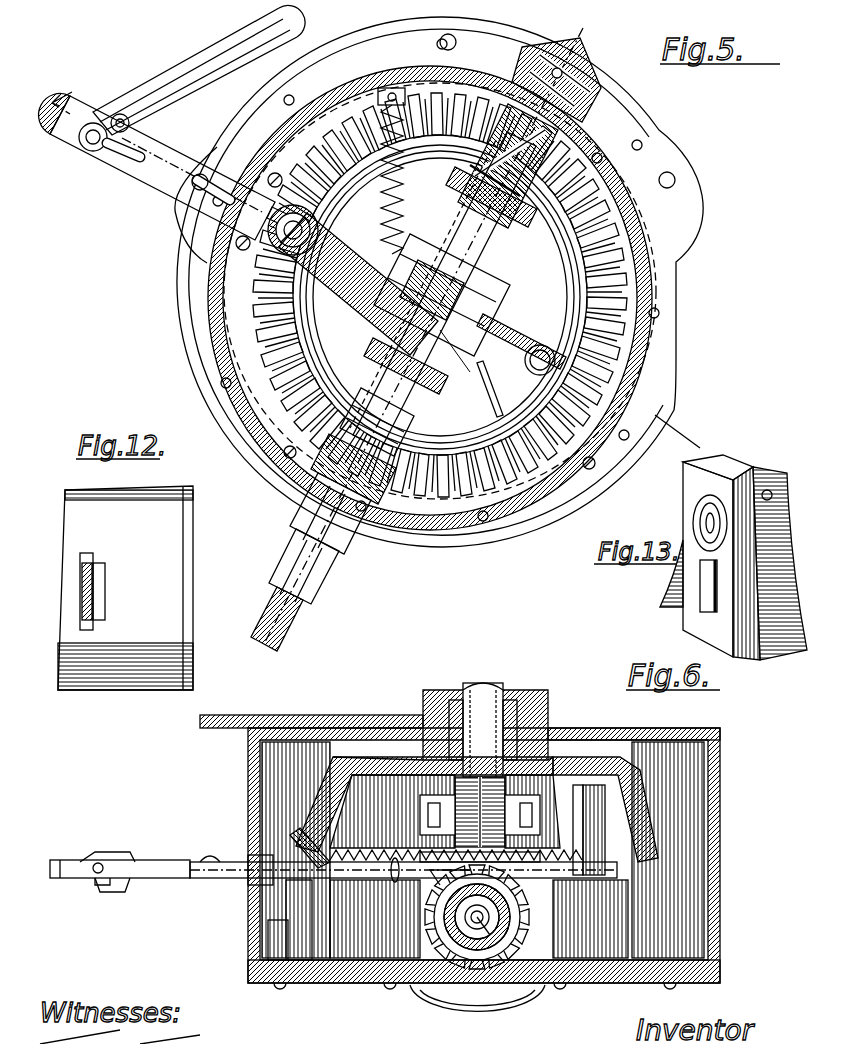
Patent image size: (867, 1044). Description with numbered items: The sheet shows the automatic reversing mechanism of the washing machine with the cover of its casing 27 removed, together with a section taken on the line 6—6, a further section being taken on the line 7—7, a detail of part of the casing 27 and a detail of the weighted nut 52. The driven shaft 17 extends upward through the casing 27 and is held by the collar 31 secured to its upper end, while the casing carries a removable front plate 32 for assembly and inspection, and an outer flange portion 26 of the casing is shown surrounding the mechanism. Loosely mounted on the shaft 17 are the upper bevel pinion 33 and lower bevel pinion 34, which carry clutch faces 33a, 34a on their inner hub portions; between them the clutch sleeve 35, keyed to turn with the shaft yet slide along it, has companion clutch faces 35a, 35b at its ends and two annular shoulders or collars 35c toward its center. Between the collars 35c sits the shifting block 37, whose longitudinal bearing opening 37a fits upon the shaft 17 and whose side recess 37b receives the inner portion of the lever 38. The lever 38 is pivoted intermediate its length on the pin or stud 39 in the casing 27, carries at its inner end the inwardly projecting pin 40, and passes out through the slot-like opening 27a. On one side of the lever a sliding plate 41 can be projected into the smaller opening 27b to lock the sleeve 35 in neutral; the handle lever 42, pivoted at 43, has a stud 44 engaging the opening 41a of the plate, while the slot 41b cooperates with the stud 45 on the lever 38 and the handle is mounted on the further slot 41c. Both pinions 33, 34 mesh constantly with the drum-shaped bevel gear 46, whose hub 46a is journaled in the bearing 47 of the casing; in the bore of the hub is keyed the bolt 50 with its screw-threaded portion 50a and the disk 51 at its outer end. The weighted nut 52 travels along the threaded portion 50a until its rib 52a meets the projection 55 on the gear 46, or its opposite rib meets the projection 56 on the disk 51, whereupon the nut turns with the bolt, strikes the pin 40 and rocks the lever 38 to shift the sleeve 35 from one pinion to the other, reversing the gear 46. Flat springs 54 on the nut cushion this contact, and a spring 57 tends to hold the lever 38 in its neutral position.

In FIG. 5, the section line 6 is at (376, 261).
In FIG. 5, the section line 7 is at (422, 333).
In FIG. 6, the driven shaft 17 is at (520, 925).
In FIG. 5, the casing flange 26 is at (703, 205).
In FIG. 6, the casing flange 26 is at (240, 709).
In FIG. 12, the casing 27 is at (158, 633).
In FIG. 6, the casing 27 is at (712, 802).
In FIG. 12, the opening 27a is at (88, 556).
In FIG. 6, the opening 27a is at (262, 856).
In FIG. 12, the smaller opening 27b is at (104, 585).
In FIG. 6, the smaller opening 27b is at (266, 900).
In FIG. 5, the collar 31 is at (600, 90).
In FIG. 12, the removable front plate 32 is at (193, 670).
In FIG. 6, the removable front plate 32 is at (603, 984).
In FIG. 5, the upper bevel pinion 33 is at (588, 160).
In FIG. 5, the clutch face 33a is at (470, 170).
In FIG. 5, the lower bevel pinion 34 is at (312, 455).
In FIG. 6, the lower bevel pinion 34 is at (528, 938).
In FIG. 5, the clutch face 34a is at (356, 396).
In FIG. 6, the clutch sleeve 35 is at (455, 930).
In FIG. 5, the clutch face 35a is at (512, 226).
In FIG. 5, the clutch face 35b is at (388, 342).
In FIG. 5, the annular shoulders 35c is at (500, 278).
In FIG. 6, the annular shoulders 35c is at (478, 930).
In FIG. 5, the shifting block 37 is at (480, 292).
In FIG. 6, the shifting block 37 is at (515, 908).
In FIG. 6, the bearing opening 37a is at (430, 955).
In FIG. 6, the side recess 37b is at (445, 893).
In FIG. 5, the lever 38 is at (404, 252).
In FIG. 12, the lever 38 is at (92, 603).
In FIG. 6, the lever 38 is at (210, 858).
In FIG. 5, the pin 39 is at (270, 235).
In FIG. 6, the pin 39 is at (312, 960).
In FIG. 5, the pin 40 is at (540, 344).
In FIG. 6, the pin 40 is at (613, 755).
In FIG. 5, the sliding plate 41 is at (170, 178).
In FIG. 6, the sliding plate 41 is at (218, 878).
In FIG. 6, the opening 41a is at (105, 858).
In FIG. 5, the slot 41b is at (222, 192).
In FIG. 5, the slot 41c is at (128, 157).
In FIG. 5, the handle lever 42 is at (163, 80).
In FIG. 5, the pivot 43 is at (88, 143).
In FIG. 6, the pivot 43 is at (108, 892).
In FIG. 6, the stud 44 is at (125, 856).
In FIG. 5, the stud 45 is at (200, 174).
In FIG. 6, the stud 45 is at (93, 868).
In FIG. 6, the bevel gear 46 is at (390, 760).
In FIG. 6, the hub 46a is at (448, 692).
In FIG. 6, the bearing 47 is at (460, 735).
In FIG. 6, the bolt 50 is at (498, 696).
In FIG. 6, the screw-threaded portion 50a is at (520, 710).
In FIG. 6, the disk 51 is at (505, 840).
In FIG. 5, the nut 52 is at (462, 400).
In FIG. 13, the nut 52 is at (765, 472).
In FIG. 6, the nut 52 is at (440, 700).
In FIG. 13, the rib 52a is at (705, 600).
In FIG. 5, the flat springs 54 is at (490, 380).
In FIG. 13, the flat springs 54 is at (780, 580).
In FIG. 6, the flat springs 54 is at (538, 815).
In FIG. 6, the projection 55 is at (565, 790).
In FIG. 6, the projection 56 is at (525, 858).
In FIG. 5, the spring 57 is at (392, 88).